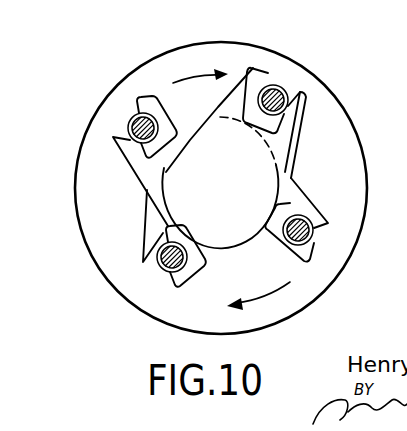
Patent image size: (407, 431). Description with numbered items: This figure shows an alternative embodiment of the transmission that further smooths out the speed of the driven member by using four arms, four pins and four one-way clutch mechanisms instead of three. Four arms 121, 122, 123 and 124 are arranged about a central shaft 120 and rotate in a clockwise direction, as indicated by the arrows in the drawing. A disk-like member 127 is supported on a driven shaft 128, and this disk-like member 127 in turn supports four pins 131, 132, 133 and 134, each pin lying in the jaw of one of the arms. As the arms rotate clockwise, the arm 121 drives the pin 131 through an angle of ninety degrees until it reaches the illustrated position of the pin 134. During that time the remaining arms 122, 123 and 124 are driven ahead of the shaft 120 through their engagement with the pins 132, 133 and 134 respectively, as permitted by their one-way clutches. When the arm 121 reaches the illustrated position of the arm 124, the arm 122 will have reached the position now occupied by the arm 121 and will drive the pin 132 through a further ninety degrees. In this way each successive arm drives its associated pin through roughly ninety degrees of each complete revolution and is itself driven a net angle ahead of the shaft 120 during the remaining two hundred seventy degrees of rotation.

The shaft 120 is at (221, 190).
The arm 121 is at (140, 180).
The arm 122 is at (147, 229).
The arm 123 is at (318, 211).
The arm 124 is at (288, 164).
The disk-like member 127 is at (241, 58).
The driven shaft 128 is at (220, 168).
The pin 131 is at (132, 119).
The pin 132 is at (160, 268).
The pin 133 is at (311, 238).
The pin 134 is at (290, 91).